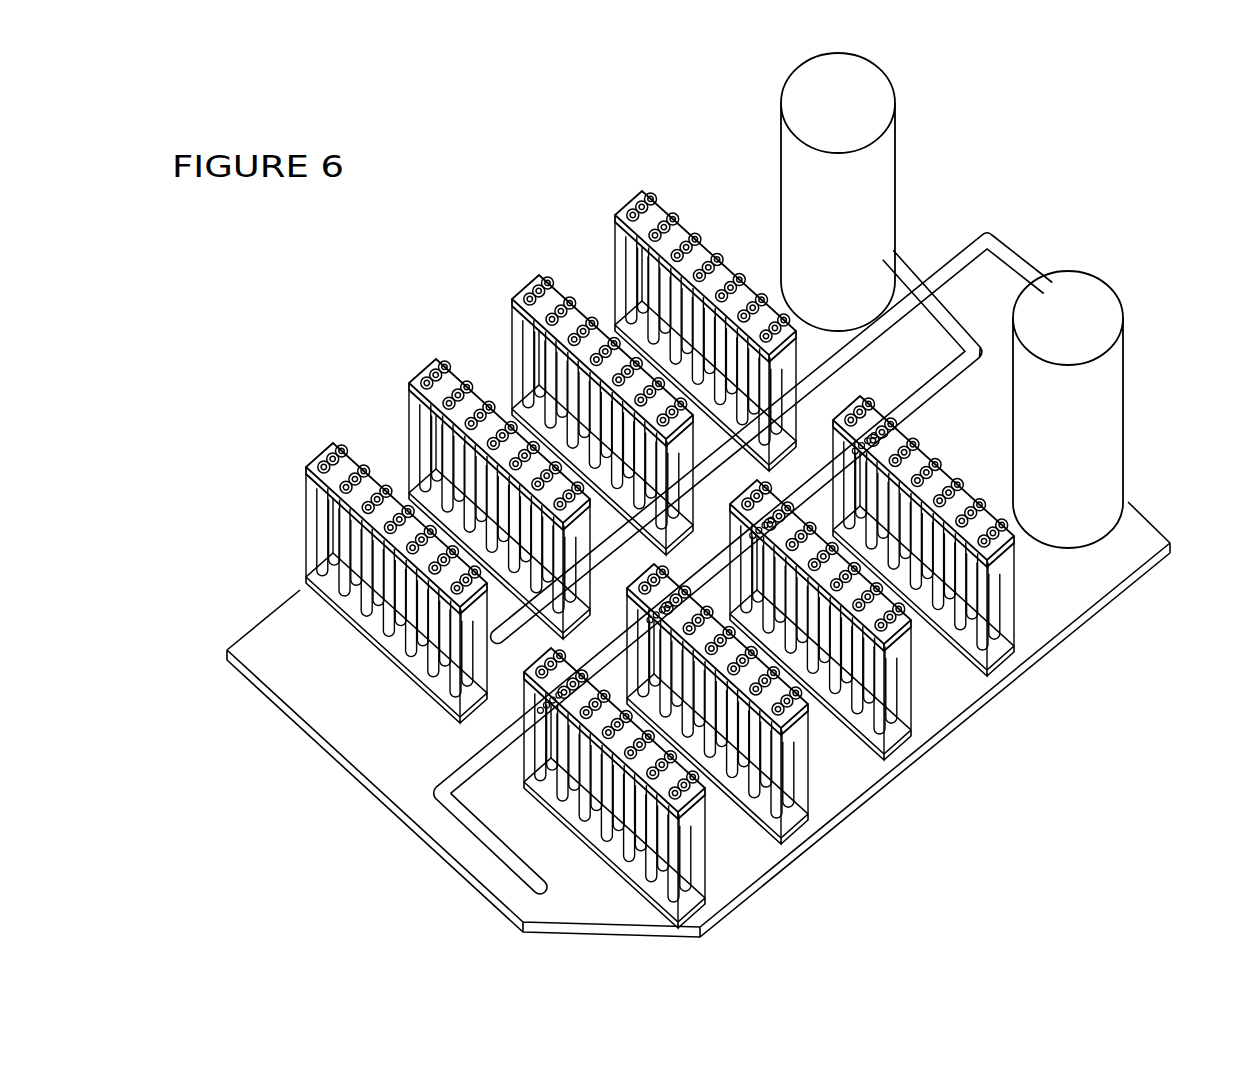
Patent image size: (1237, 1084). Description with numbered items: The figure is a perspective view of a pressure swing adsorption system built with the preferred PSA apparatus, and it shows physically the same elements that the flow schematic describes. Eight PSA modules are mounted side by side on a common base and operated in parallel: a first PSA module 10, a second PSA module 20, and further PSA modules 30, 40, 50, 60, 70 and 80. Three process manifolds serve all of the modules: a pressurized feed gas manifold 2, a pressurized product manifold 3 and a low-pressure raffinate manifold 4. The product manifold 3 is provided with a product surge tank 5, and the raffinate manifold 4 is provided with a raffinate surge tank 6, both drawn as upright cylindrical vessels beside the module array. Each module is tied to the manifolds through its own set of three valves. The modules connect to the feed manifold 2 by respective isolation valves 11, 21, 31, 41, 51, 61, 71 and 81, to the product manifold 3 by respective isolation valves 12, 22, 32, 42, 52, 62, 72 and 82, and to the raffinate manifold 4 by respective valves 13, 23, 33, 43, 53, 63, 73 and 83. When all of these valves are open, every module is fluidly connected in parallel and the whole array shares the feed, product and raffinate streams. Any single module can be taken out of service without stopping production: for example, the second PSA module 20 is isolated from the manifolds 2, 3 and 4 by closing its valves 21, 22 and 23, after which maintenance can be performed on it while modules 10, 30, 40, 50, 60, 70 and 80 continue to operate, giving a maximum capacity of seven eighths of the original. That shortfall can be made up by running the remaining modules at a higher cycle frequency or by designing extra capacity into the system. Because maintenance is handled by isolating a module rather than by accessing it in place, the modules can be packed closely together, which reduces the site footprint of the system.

The pressurized feed gas manifold 2 is at (447, 843).
The pressurized product manifold 3 is at (797, 413).
The low-pressure raffinate manifold 4 is at (719, 495).
The product surge tank 5 is at (1107, 409).
The raffinate surge tank 6 is at (868, 192).
The first PSA module 10 is at (372, 545).
The isolation valve 11 is at (326, 553).
The isolation valve 12 is at (393, 479).
The valve 13 is at (355, 557).
The second PSA module 20 is at (470, 445).
The isolation valve 21 is at (428, 455).
The isolation valve 22 is at (486, 373).
The valve 23 is at (452, 460).
The PSA module 30 is at (573, 350).
The isolation valve 31 is at (532, 360).
The isolation valve 32 is at (583, 279).
The valve 33 is at (553, 362).
The PSA module 40 is at (672, 263).
The isolation valve 41 is at (629, 269).
The isolation valve 42 is at (686, 199).
The valve 43 is at (654, 273).
The PSA module 50 is at (689, 785).
The isolation valve 51 is at (659, 797).
The isolation valve 52 is at (716, 757).
The valve 53 is at (671, 843).
The PSA module 60 is at (798, 701).
The isolation valve 61 is at (763, 713).
The isolation valve 62 is at (823, 682).
The valve 63 is at (776, 759).
The PSA module 70 is at (906, 617).
The isolation valve 71 is at (874, 629).
The isolation valve 72 is at (927, 590).
The valve 73 is at (889, 675).
The PSA module 80 is at (1008, 533).
The isolation valve 81 is at (976, 545).
The isolation valve 82 is at (1034, 510).
The valve 83 is at (990, 591).